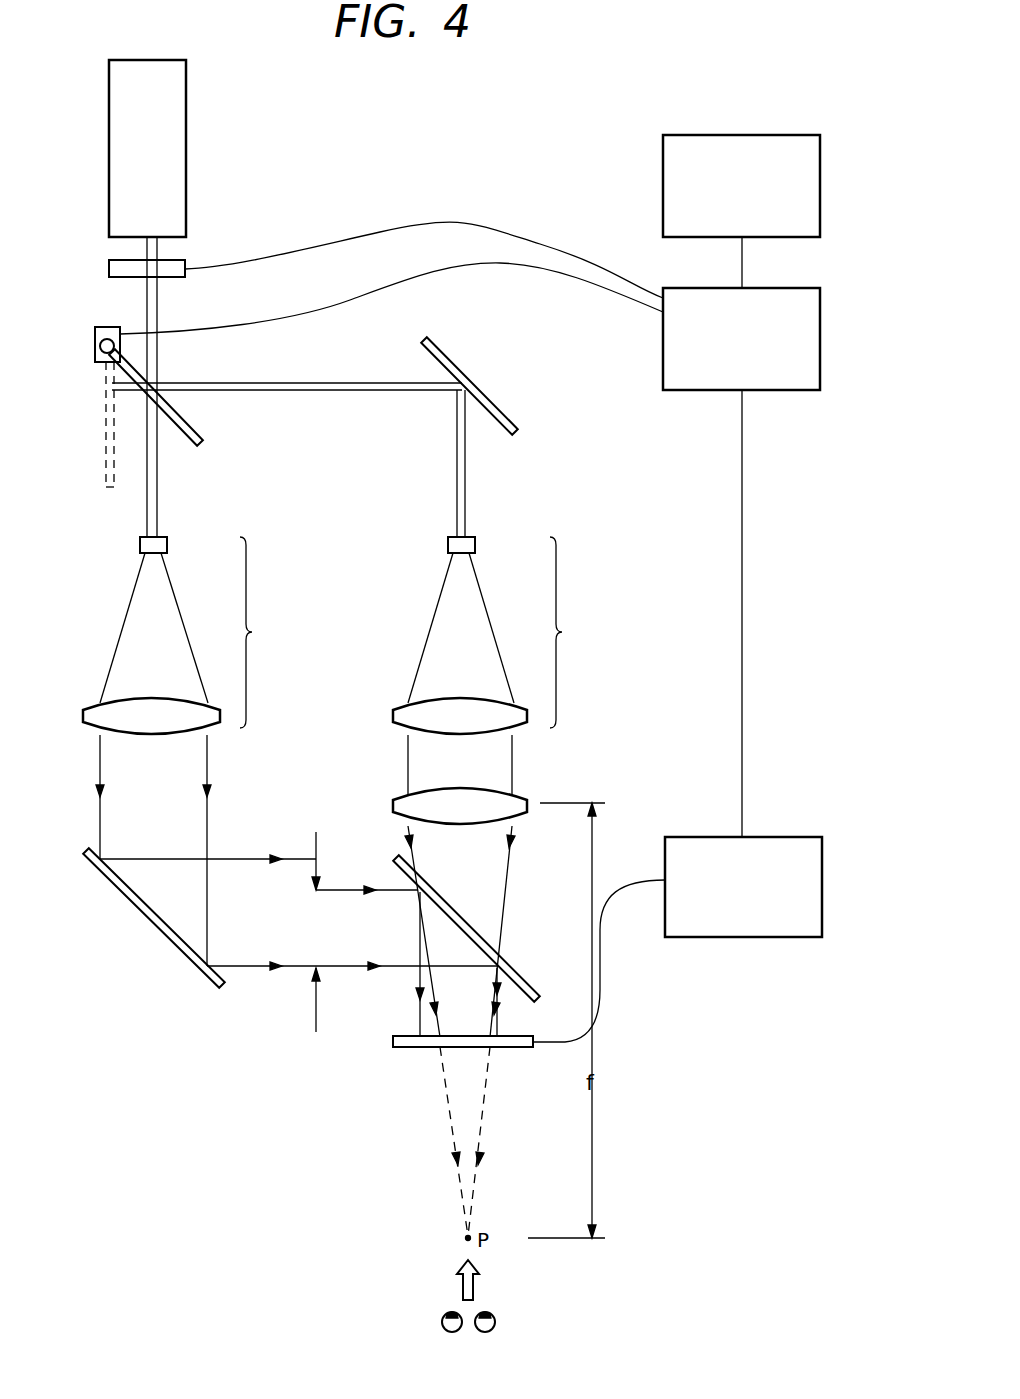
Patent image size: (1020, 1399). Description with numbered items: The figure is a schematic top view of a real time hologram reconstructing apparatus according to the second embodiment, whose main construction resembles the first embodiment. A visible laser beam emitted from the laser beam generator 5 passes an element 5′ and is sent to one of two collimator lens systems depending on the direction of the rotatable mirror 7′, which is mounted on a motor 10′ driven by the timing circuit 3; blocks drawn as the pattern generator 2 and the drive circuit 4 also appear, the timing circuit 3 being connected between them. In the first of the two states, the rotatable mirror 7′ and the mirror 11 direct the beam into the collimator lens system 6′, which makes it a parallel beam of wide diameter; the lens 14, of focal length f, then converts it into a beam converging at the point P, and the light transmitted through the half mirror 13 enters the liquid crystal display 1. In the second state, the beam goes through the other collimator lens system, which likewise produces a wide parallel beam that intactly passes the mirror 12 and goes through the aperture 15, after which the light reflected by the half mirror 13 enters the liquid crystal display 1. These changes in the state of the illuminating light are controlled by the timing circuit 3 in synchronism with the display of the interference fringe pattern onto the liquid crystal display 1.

The liquid crystal display 1 is at (398, 1047).
The pattern generator 2 is at (663, 191).
The timing circuit 3 is at (663, 356).
The drive circuit 4 is at (707, 937).
The laser beam generator 5 is at (187, 173).
The shutter / modulator plate 5′ is at (170, 268).
The collimator lens system 6′ is at (490, 635).
The rotatable mirror 7′ is at (202, 441).
The motor 10′ is at (109, 340).
The mirror 11 is at (517, 432).
The mirror 12 is at (134, 908).
The half mirror 13 is at (532, 982).
The lens 14 is at (522, 797).
The aperture 15 is at (316, 840).